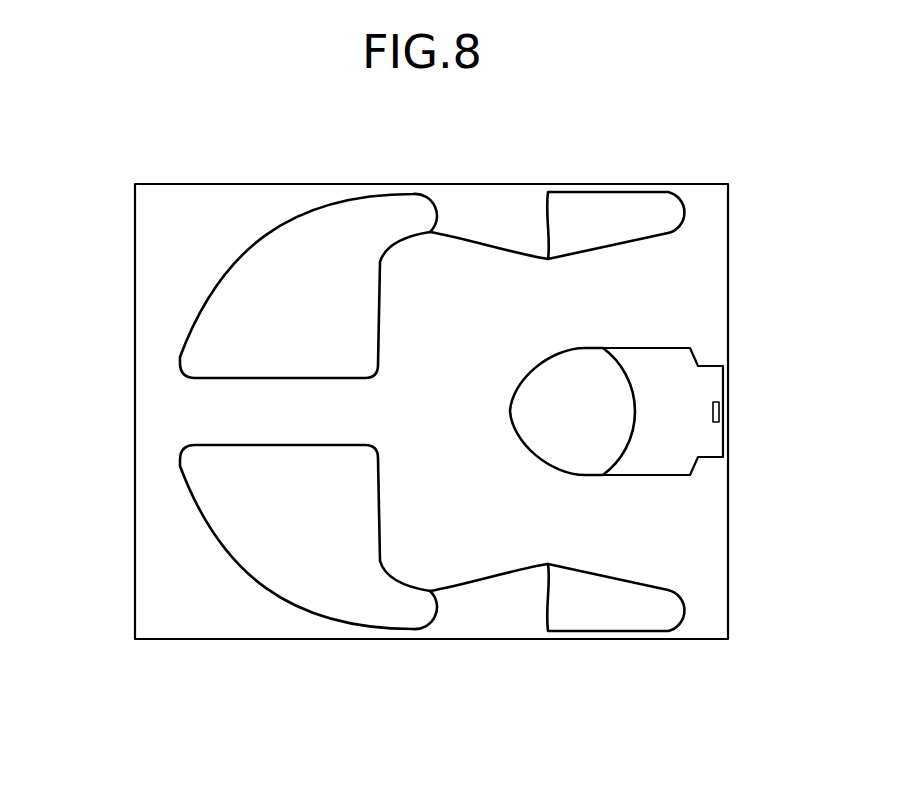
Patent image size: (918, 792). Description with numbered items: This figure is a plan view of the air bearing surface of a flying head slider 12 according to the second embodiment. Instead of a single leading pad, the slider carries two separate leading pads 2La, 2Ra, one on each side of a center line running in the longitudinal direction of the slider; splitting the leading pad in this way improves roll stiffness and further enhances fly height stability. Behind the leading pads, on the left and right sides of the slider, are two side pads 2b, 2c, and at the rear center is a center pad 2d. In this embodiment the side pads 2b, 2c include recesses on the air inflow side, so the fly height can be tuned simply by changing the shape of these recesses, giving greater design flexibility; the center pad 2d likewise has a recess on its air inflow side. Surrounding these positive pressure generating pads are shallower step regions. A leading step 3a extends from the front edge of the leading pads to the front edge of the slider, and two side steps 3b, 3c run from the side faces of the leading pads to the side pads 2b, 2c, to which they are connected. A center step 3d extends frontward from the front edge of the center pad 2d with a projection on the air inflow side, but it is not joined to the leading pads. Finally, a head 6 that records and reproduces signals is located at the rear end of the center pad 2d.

The flying head slider 12 is at (330, 645).
The leading pad 2La is at (233, 322).
The leading pad 2Ra is at (225, 515).
The side pad 2b is at (661, 205).
The side pad 2c is at (590, 622).
The center pad 2d is at (714, 443).
The leading step 3a is at (163, 400).
The side step 3b is at (502, 203).
The side step 3c is at (485, 628).
The center step 3d is at (587, 455).
The head 6 is at (719, 408).